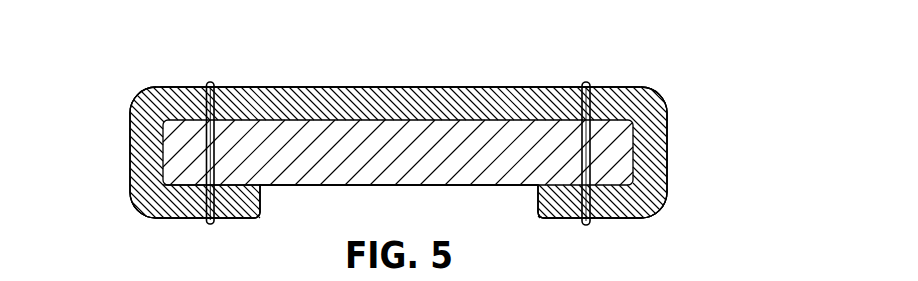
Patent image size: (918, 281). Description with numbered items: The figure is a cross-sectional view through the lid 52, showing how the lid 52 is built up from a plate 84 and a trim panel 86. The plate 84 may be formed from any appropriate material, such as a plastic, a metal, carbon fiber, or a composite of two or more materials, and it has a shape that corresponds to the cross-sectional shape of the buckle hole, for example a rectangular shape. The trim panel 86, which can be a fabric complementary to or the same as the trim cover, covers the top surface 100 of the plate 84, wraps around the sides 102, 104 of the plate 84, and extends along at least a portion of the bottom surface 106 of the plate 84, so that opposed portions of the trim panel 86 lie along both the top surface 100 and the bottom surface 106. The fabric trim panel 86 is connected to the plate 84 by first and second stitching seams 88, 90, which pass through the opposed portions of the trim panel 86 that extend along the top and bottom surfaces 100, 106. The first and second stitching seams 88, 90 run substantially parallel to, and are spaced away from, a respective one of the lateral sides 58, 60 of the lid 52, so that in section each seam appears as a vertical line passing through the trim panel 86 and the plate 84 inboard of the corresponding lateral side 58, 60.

The lid 52 is at (703, 193).
The lateral side 58 is at (132, 127).
The lateral side 60 is at (667, 127).
The plate 84 is at (307, 167).
The trim panel 86 is at (394, 88).
The first stitching seam 88 is at (586, 85).
The second stitching seam 90 is at (211, 84).
The top surface 100 is at (305, 110).
The side 102 is at (638, 173).
The side 104 is at (155, 172).
The bottom surface 106 is at (518, 186).